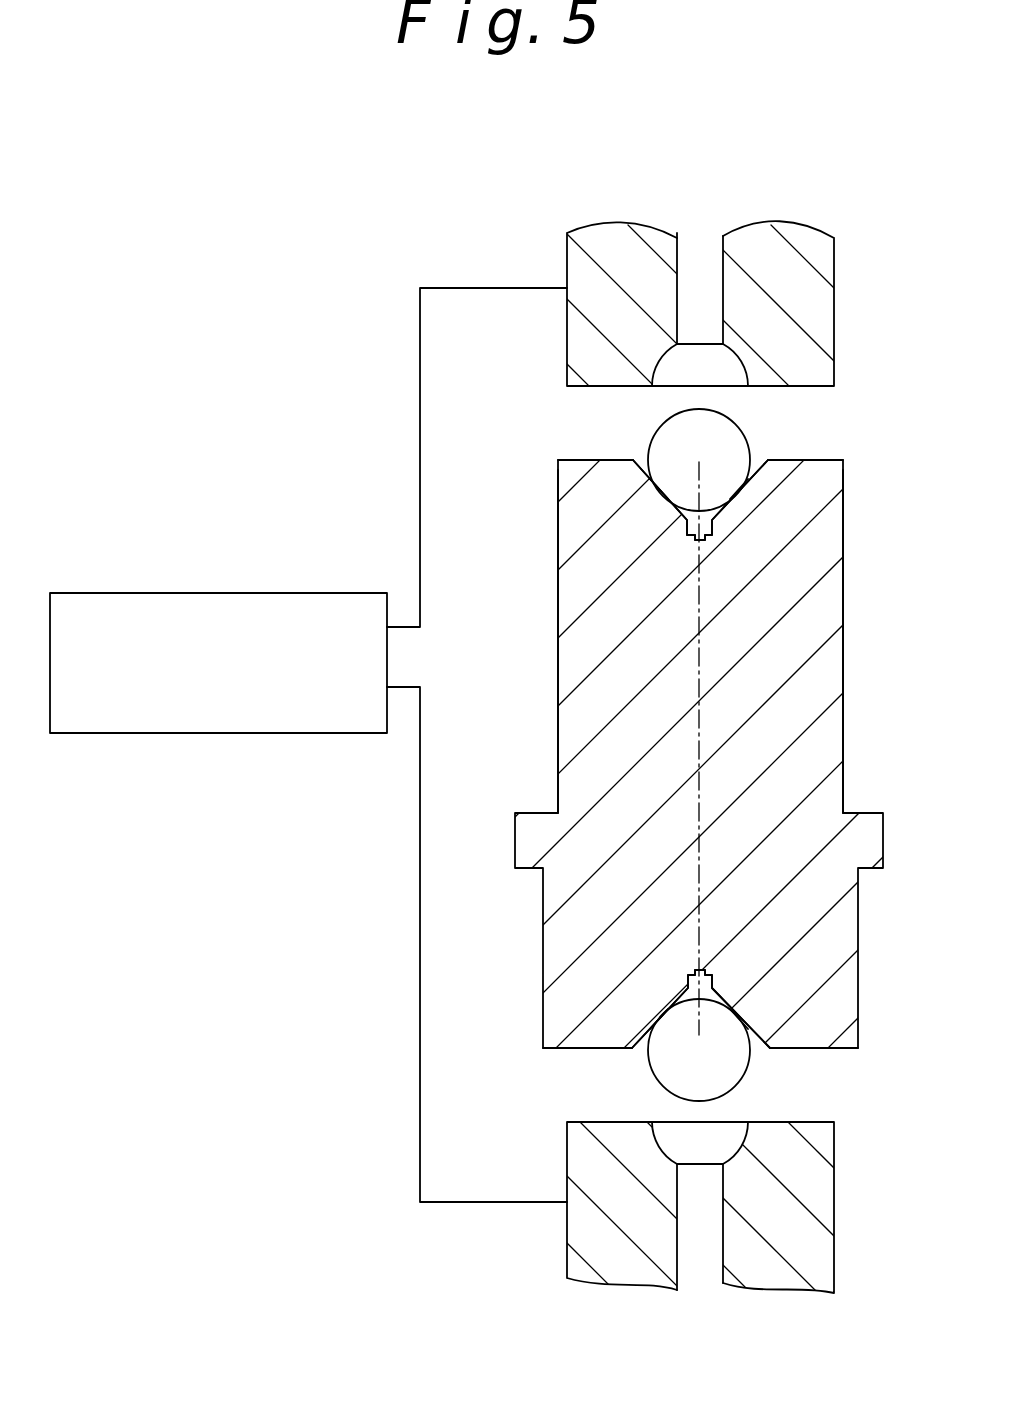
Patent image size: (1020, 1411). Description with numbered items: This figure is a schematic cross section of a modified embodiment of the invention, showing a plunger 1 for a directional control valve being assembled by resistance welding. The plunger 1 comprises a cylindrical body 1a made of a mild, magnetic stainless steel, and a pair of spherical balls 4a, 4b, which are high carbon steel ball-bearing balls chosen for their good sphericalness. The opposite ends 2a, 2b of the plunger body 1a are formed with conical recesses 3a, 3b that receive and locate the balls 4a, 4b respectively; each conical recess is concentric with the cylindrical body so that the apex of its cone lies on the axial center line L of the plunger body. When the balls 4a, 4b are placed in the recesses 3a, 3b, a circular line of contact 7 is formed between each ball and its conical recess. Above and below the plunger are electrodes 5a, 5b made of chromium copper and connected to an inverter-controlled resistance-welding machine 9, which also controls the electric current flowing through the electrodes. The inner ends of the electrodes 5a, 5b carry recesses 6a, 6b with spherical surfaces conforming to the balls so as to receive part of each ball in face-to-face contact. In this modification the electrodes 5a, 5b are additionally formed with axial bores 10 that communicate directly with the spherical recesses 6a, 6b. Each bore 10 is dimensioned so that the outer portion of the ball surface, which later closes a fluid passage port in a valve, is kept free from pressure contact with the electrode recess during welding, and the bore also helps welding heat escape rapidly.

The plunger 1 is at (843, 592).
The cylindrical body 1a is at (830, 665).
The end of the plunger body 2a is at (827, 460).
The end of the plunger body 2b is at (846, 1050).
The conical recess 3a is at (637, 460).
The conical recess 3b is at (640, 1050).
The spherical ball 4a is at (735, 414).
The spherical ball 4b is at (748, 1068).
The electrode 5a is at (682, 305).
The electrode 5b is at (834, 1198).
The spherical recess 6a is at (668, 368).
The spherical recess 6b is at (665, 1126).
The circular line of contact 7 is at (658, 496).
The inverter-controlled resistance-welding machine 9 is at (220, 593).
The axial bore 10 is at (716, 258).
The axial center line L is at (700, 717).